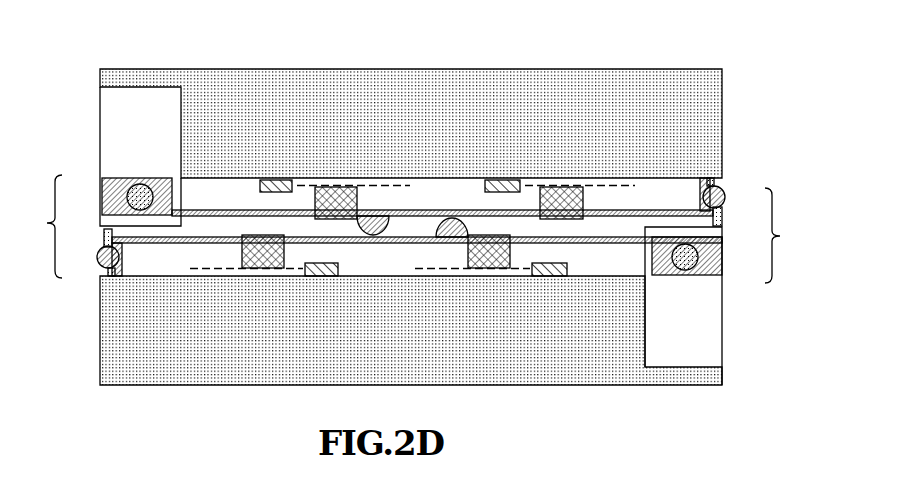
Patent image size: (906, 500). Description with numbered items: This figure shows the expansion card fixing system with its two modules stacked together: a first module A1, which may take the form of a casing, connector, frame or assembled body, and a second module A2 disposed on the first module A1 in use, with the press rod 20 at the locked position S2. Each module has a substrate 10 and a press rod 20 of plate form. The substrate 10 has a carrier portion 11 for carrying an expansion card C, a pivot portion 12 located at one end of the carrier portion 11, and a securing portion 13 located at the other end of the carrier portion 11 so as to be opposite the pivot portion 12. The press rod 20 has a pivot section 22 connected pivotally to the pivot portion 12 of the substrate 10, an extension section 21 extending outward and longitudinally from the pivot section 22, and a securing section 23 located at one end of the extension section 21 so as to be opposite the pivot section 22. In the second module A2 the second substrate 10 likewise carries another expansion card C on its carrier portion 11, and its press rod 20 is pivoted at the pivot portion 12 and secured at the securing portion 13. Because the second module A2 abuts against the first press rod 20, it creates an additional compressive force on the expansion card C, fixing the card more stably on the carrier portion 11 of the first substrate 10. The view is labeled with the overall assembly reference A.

The substrate 10 is at (100, 152).
The carrier portion 11 is at (338, 180).
The pivot portion 12 is at (138, 180).
The securing portion 13 is at (712, 178).
The press rod 20 is at (725, 228).
The extension section 21 is at (393, 213).
The pivot section 22 is at (173, 188).
The securing section 23 is at (727, 196).
The expansion card C is at (383, 183).
The assembly A is at (712, 34).
The first module A1 is at (792, 235).
The second module A2 is at (38, 226).
The locked position S2 is at (80, 125).